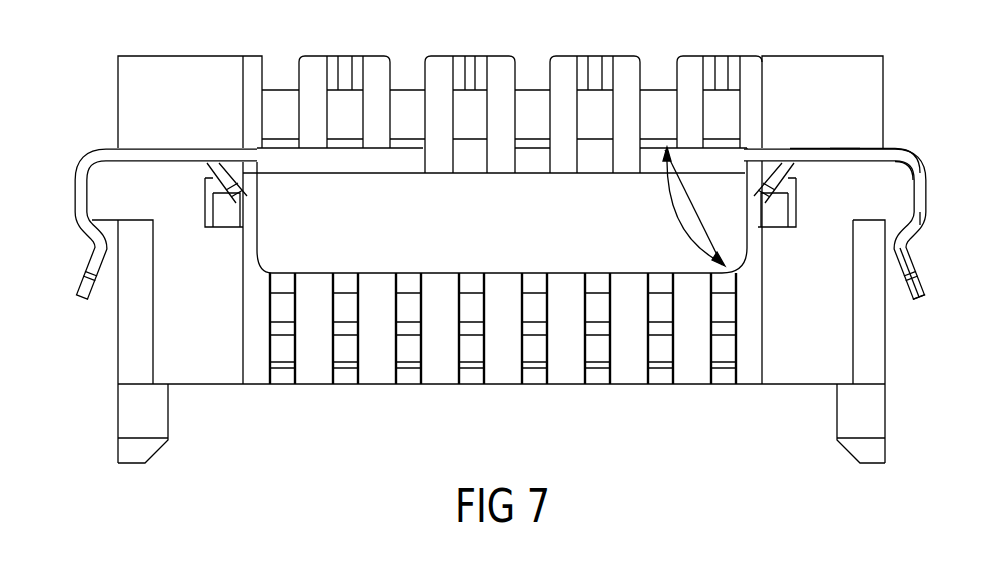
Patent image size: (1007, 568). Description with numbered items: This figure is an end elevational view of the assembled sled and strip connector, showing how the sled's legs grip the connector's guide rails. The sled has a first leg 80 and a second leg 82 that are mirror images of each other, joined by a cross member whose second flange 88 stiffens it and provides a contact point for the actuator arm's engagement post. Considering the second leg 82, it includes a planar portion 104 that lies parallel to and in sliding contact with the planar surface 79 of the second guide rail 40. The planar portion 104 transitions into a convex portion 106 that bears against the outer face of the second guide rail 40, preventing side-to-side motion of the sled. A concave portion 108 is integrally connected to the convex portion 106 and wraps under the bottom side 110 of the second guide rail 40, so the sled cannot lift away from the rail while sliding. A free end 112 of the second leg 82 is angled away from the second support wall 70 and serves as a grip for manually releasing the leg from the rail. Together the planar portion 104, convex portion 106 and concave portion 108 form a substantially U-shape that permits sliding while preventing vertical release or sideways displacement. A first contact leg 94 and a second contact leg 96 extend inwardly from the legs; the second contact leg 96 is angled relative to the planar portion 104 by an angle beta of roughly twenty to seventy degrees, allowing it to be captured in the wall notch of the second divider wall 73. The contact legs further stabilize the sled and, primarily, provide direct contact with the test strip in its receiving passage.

The second guide rail 40 is at (903, 162).
The second support wall 70 is at (876, 353).
The second divider wall 73 is at (750, 178).
The planar surface 79 is at (848, 160).
The first leg 80 is at (92, 158).
The second leg 82 is at (893, 150).
The second flange 88 is at (278, 243).
The first contact leg 94 is at (238, 196).
The second contact leg 96 is at (780, 182).
The planar portion 104 is at (828, 150).
The convex portion 106 is at (920, 163).
The concave portion 108 is at (897, 247).
The bottom side 110 is at (888, 221).
The free end 112 is at (925, 290).